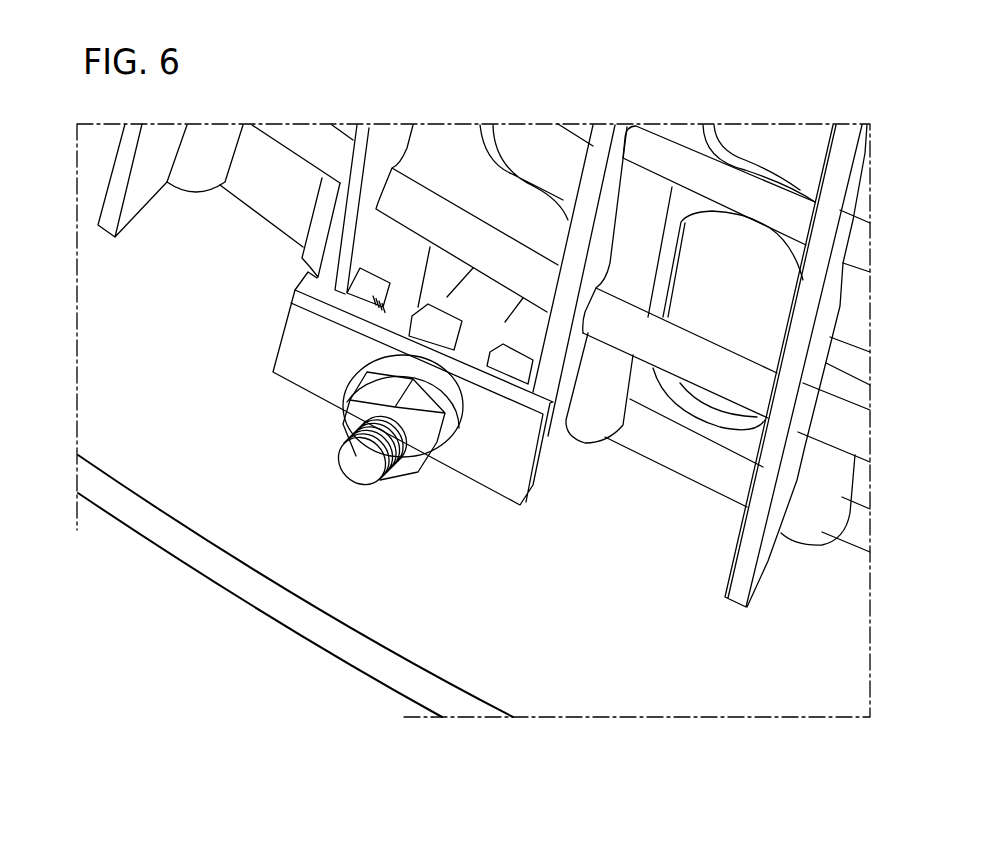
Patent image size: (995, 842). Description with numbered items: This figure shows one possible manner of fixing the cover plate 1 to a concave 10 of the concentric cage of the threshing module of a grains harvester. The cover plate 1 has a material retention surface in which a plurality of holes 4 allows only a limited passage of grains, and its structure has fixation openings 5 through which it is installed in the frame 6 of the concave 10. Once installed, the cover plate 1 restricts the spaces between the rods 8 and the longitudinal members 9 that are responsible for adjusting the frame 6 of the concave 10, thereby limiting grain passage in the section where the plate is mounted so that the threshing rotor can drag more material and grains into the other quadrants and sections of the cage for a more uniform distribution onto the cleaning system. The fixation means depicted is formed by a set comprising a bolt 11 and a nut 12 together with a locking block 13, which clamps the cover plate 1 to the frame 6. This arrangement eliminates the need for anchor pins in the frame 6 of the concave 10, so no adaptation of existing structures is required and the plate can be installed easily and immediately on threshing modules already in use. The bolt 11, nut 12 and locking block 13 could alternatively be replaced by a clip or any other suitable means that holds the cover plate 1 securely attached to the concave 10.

The cover plate 1 is at (727, 650).
The holes 4 is at (533, 156).
The fixation openings 5 is at (294, 372).
The frame 6 is at (270, 522).
The rods 8 is at (428, 148).
The longitudinal members 9 is at (308, 133).
The concave 10 is at (345, 687).
The bolt 11 is at (487, 303).
The nut 12 is at (398, 462).
The locking block 13 is at (317, 365).